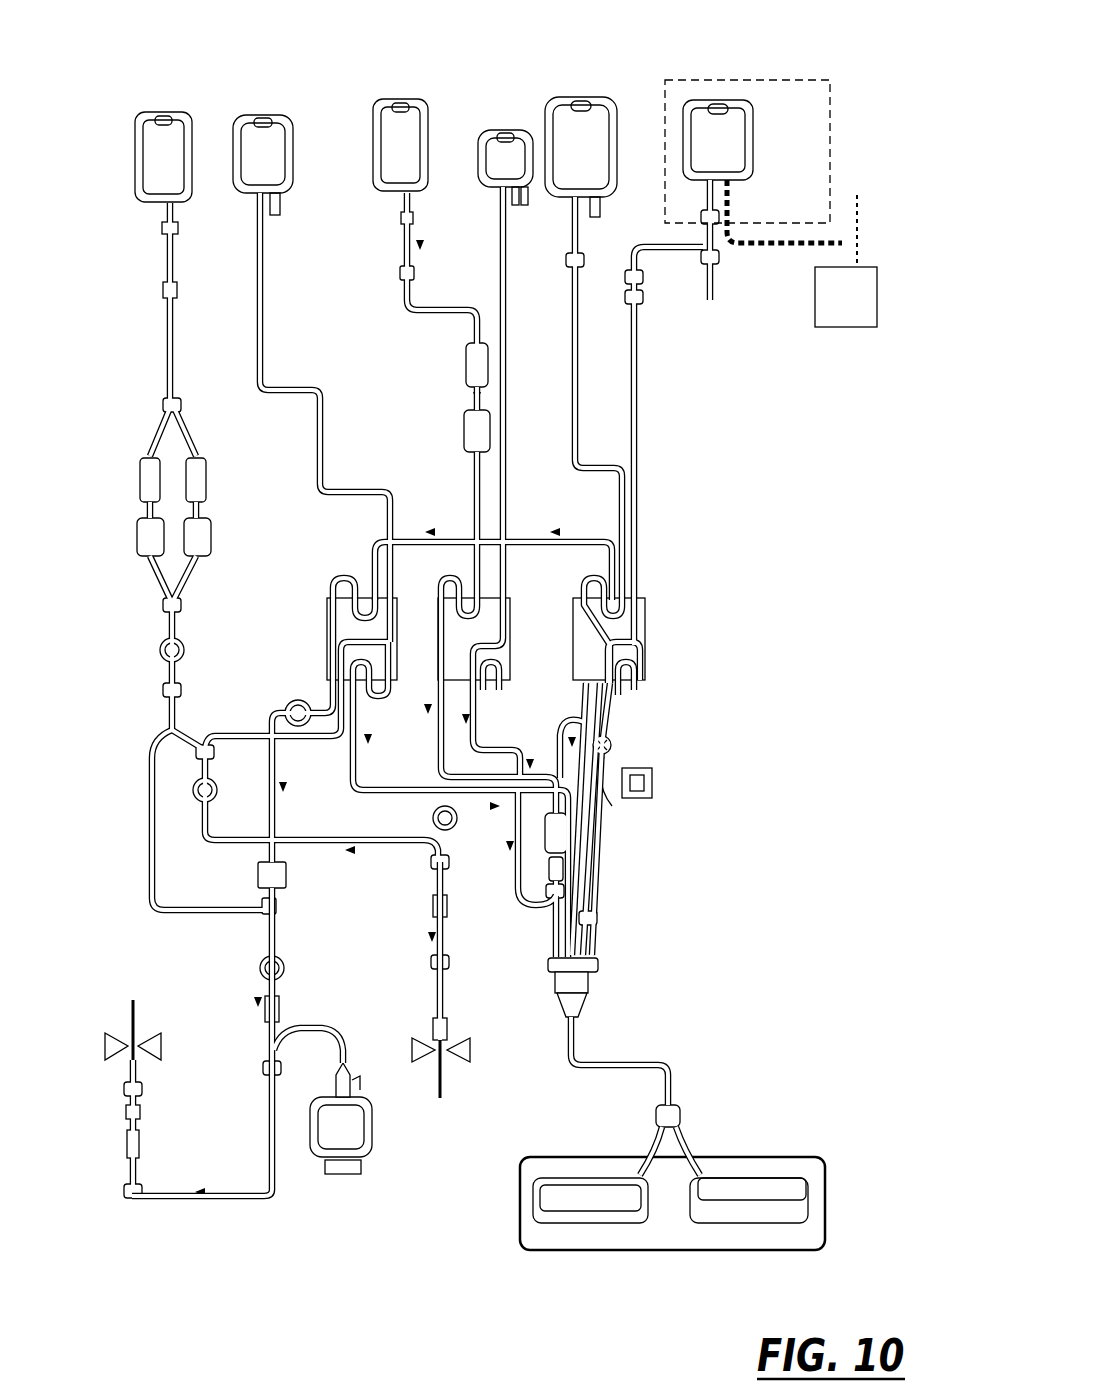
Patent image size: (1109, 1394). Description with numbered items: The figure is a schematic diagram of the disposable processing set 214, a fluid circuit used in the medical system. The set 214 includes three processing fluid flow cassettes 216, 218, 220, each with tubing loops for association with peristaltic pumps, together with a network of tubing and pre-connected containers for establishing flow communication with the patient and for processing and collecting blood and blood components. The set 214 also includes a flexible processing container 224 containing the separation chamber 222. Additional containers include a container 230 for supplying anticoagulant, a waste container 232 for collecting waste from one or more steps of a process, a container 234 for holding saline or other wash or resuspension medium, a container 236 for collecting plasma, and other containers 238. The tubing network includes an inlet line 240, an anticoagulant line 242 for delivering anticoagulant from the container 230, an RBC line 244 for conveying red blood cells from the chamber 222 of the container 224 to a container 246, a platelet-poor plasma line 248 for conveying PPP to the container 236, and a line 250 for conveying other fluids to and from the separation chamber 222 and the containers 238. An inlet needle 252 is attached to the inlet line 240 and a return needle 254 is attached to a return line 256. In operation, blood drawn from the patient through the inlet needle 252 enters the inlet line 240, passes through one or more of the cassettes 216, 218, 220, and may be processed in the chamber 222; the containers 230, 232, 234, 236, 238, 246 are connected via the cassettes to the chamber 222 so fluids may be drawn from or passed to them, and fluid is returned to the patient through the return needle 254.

The processing set 214 is at (502, 626).
The processing fluid flow cassette 216 is at (325, 612).
The processing fluid flow cassette 218 is at (512, 614).
The processing fluid flow cassette 220 is at (648, 619).
The separation chamber 222 is at (755, 1185).
The flexible processing container 224 is at (822, 1200).
The anticoagulant container 230 is at (417, 104).
The waste container 232 is at (290, 140).
The saline container 234 is at (190, 126).
The plasma container 236 is at (606, 98).
The other container 238 is at (752, 156).
The inlet line 240 is at (446, 941).
The anticoagulant line 242 is at (432, 320).
The RBC line 244 is at (512, 498).
The red blood cell container 246 is at (515, 131).
The platelet-poor plasma line 248 is at (578, 356).
The line 250 is at (640, 399).
The inlet needle 252 is at (450, 1083).
The return needle 254 is at (128, 1020).
The return line 256 is at (268, 1172).